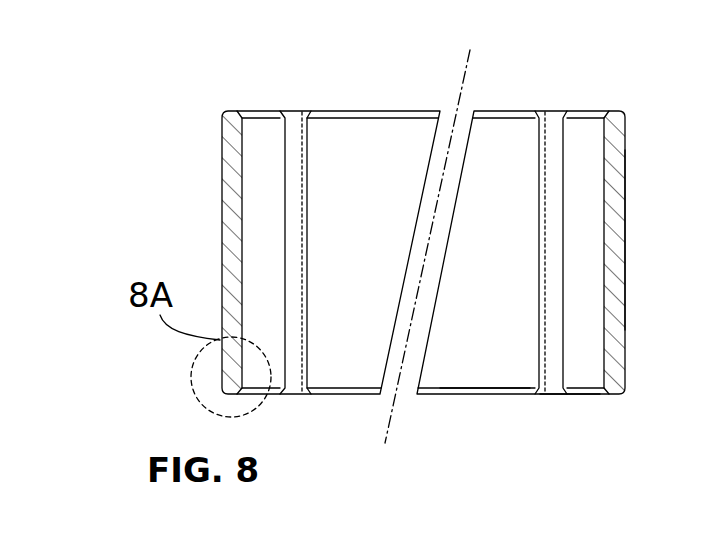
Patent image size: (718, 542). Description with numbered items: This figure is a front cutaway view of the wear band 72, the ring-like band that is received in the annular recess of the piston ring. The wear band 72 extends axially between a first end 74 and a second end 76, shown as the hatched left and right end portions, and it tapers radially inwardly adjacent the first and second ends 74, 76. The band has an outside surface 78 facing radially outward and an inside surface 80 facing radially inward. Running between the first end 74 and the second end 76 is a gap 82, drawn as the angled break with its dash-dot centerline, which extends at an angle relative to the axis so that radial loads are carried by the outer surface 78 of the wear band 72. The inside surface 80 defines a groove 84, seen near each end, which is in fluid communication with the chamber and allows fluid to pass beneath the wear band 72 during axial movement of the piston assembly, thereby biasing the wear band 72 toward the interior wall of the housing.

The wear band 72 is at (593, 103).
The first end 74 is at (607, 110).
The second end 76 is at (588, 395).
The outside surface 78 is at (622, 198).
The inside surface 80 is at (488, 375).
The gap 82 is at (402, 288).
The groove 84 is at (290, 123).